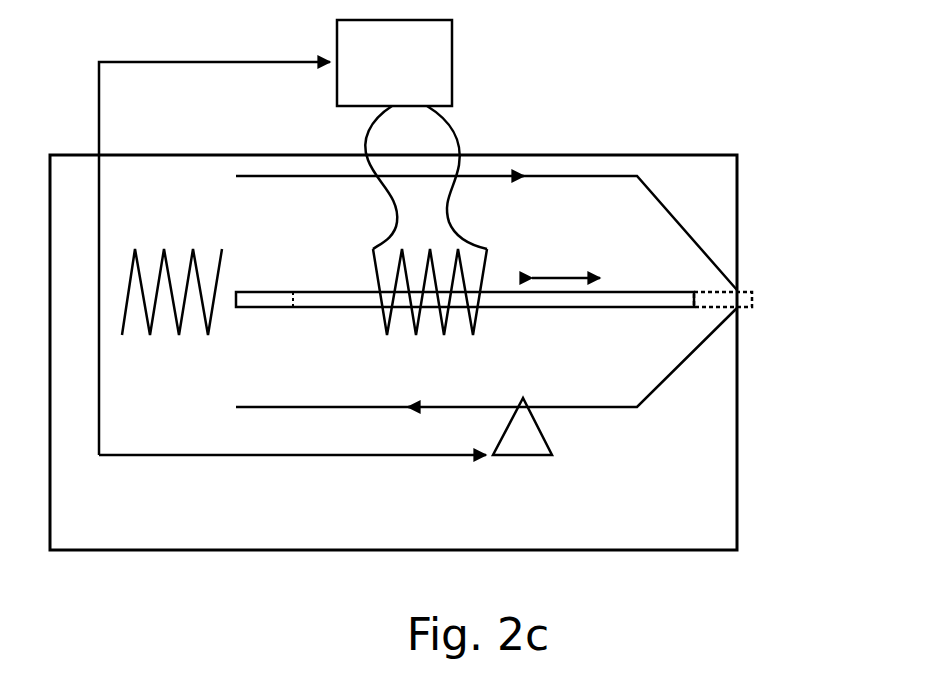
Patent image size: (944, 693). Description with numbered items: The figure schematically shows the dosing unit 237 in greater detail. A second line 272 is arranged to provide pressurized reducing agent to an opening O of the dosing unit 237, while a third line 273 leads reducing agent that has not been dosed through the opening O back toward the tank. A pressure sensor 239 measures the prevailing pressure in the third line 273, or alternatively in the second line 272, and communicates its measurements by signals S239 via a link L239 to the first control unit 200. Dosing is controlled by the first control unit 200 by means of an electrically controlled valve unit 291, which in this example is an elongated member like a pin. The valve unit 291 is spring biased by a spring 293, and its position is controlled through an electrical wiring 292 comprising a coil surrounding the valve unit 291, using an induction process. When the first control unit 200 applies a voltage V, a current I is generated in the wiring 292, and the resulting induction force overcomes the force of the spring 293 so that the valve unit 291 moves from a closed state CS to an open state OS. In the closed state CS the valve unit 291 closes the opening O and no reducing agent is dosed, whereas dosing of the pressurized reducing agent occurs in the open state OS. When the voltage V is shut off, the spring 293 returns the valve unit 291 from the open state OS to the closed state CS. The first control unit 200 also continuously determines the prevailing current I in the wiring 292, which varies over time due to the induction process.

The first control unit 200 is at (394, 63).
The dosing unit 237 is at (737, 350).
The pressure sensor 239 is at (494, 459).
The link L239 is at (143, 458).
The signals S239 is at (292, 473).
The second line 272 is at (572, 177).
The third line 273 is at (340, 407).
The valve unit 291 is at (612, 307).
The electrical wiring 292 is at (372, 232).
The spring 293 is at (164, 249).
The opening O is at (764, 286).
The open state OS is at (560, 259).
The closed state CS is at (607, 253).
The voltage V is at (415, 139).
The current I is at (472, 133).